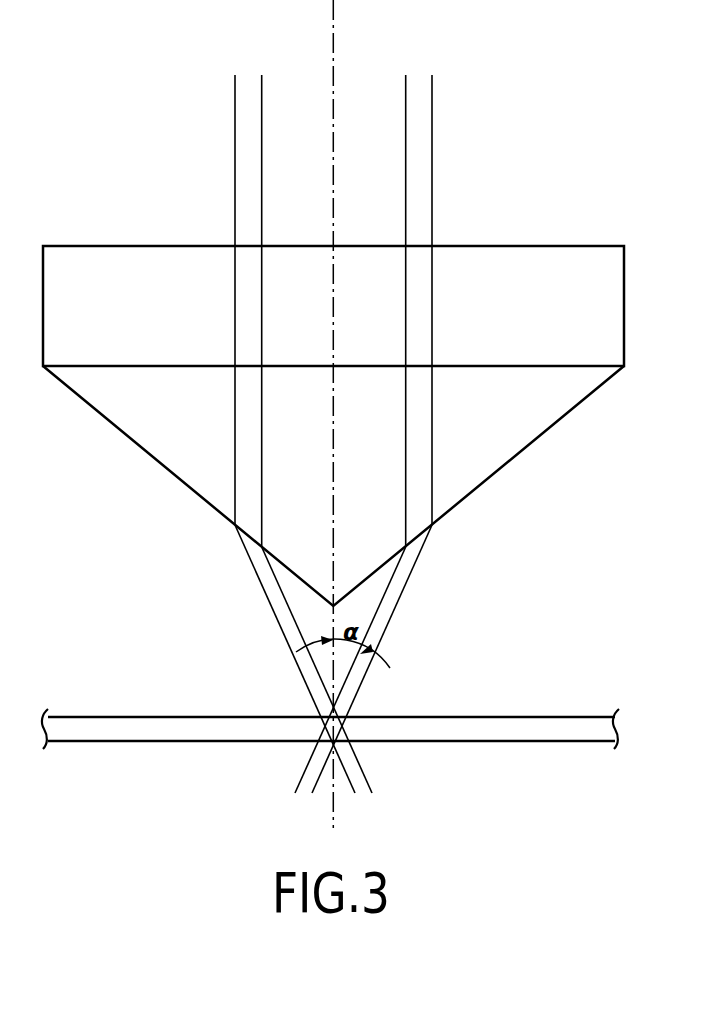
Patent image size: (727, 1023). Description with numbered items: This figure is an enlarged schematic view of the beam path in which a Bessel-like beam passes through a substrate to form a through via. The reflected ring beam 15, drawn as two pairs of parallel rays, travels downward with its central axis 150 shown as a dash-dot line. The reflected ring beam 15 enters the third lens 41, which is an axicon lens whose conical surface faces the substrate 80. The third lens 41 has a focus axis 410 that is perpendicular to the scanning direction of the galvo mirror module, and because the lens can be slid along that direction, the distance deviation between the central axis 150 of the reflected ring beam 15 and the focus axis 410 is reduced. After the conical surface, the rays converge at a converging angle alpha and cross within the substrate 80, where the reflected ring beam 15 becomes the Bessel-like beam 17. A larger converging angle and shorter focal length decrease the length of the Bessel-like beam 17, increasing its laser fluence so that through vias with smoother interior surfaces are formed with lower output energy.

The central axis 150 is at (333, 57).
The reflected ring beam 15 is at (432, 158).
The third lens 41 is at (510, 462).
The focus axis 410 is at (331, 422).
The Bessel-like beam 17 is at (335, 729).
The substrate 80 is at (500, 729).